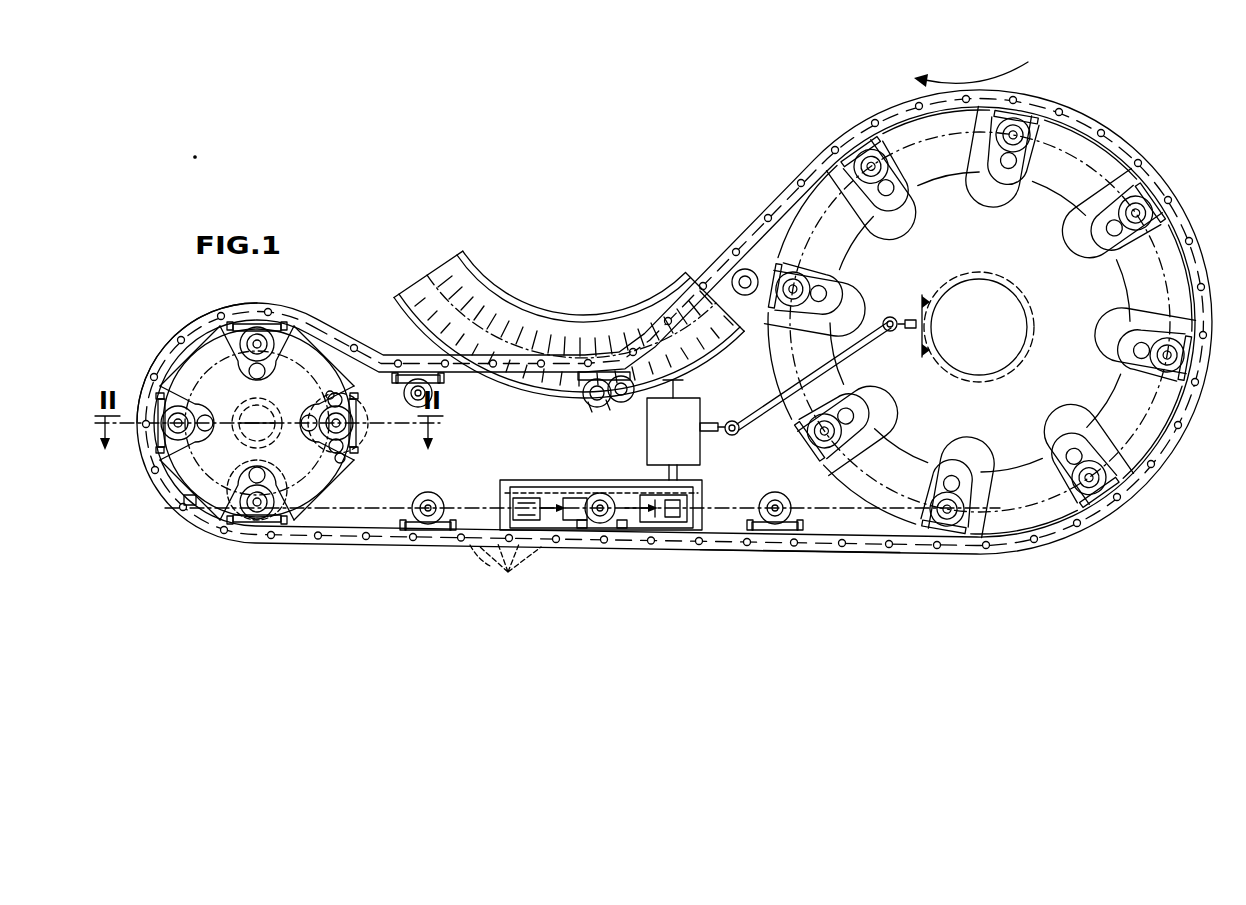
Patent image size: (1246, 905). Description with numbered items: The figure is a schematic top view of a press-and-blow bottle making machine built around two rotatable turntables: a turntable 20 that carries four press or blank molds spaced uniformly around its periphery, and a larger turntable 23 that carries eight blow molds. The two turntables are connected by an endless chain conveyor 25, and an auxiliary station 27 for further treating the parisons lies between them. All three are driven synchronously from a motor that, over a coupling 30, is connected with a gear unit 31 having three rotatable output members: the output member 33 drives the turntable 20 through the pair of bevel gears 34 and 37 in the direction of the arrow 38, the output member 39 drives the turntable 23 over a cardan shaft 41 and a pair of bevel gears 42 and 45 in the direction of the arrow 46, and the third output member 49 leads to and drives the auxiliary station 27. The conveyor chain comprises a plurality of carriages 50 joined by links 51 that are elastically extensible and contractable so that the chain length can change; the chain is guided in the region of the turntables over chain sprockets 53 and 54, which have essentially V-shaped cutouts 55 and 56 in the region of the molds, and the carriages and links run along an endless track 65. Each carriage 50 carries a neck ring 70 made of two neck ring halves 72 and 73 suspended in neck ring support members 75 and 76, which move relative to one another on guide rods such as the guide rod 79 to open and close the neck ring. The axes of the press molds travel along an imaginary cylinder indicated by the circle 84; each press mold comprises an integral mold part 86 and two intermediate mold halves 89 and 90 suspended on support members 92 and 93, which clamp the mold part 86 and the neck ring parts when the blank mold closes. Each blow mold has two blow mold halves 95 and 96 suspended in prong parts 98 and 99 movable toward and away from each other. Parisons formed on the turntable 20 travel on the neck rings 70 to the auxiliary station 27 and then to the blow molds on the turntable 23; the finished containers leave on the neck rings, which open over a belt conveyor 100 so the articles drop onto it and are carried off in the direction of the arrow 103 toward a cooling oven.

The turntable 20 is at (193, 320).
The turntable 23 is at (1104, 105).
The endless chain conveyor 25 is at (750, 219).
The auxiliary station 27 is at (537, 470).
The coupling 30 is at (690, 386).
The gear unit 31 is at (660, 442).
The output member 33 is at (645, 437).
The bevel gear 34 is at (263, 361).
The bevel gear 37 is at (242, 434).
The arrow 38 is at (143, 370).
The output member 39 is at (723, 445).
The cardan shaft 41 is at (734, 446).
The bevel gear 42 is at (915, 353).
The bevel gear 45 is at (941, 381).
The arrow 46 is at (971, 61).
The output member 49 is at (667, 473).
The carriage 50 is at (458, 517).
The link 51 is at (505, 571).
The chain sprocket 53 is at (302, 350).
The chain sprocket 54 is at (1146, 438).
The V-shaped cutout 55 is at (172, 452).
The V-shaped cutout 56 is at (1135, 459).
The endless track 65 is at (819, 561).
The neck ring 70 is at (428, 527).
The neck ring half 72 is at (609, 406).
The neck ring half 73 is at (600, 411).
The neck ring support member 75 is at (618, 401).
The neck ring support member 76 is at (580, 402).
The guide rod 79 is at (438, 385).
The circle 84 is at (190, 508).
The integral mold part 86 is at (352, 427).
The intermediate mold half 89 is at (346, 445).
The intermediate mold half 90 is at (343, 403).
The support member 92 is at (348, 458).
The support member 93 is at (335, 396).
The blow mold half 95 is at (826, 433).
The blow mold half 96 is at (832, 453).
The prong part 98 is at (817, 378).
The prong part 99 is at (836, 471).
The belt conveyor 100 is at (574, 295).
The arrow 103 is at (422, 268).